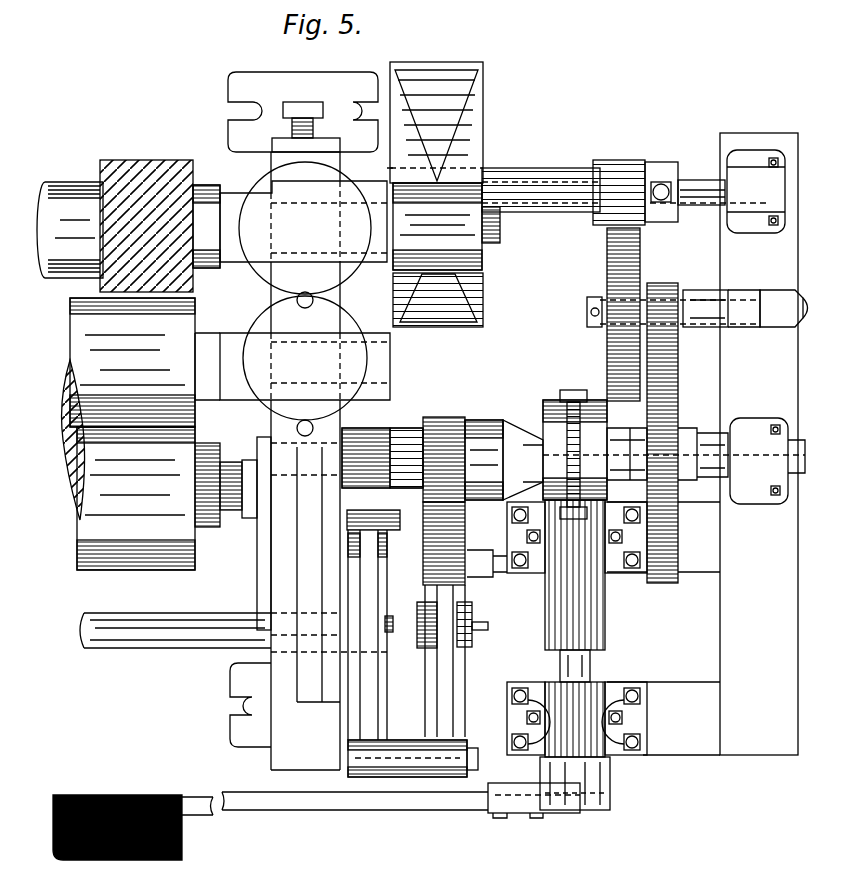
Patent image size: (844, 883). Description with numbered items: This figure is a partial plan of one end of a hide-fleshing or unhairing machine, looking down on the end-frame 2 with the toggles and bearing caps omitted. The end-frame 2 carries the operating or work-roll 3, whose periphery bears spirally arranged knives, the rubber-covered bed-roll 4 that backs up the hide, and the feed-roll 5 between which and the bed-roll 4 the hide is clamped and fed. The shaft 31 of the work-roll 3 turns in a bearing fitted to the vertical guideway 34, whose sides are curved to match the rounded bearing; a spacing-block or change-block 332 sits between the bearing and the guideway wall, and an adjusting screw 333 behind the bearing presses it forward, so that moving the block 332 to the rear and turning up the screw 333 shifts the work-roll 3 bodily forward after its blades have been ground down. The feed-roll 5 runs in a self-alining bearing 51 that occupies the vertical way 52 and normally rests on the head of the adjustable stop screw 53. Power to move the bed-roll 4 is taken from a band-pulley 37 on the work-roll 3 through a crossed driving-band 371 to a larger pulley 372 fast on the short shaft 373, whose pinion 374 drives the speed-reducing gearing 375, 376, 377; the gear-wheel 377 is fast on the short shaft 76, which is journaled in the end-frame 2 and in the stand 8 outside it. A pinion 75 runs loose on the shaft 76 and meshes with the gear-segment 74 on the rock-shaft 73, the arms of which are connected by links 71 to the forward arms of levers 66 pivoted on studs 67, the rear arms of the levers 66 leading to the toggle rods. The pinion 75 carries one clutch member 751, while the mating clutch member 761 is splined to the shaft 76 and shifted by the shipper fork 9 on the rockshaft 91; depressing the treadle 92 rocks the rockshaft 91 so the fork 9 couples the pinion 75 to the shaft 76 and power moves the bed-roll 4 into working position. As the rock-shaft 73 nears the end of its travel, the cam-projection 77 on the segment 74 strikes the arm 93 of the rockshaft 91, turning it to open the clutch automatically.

The end-frame 2 is at (302, 765).
The operating or work-roll 3 is at (100, 175).
The bed-roll 4 is at (128, 465).
The feed-roll 5 is at (132, 362).
The stand 8 is at (752, 378).
The shipper fork 9 is at (573, 410).
The shaft 31 is at (492, 243).
The vertical guideway 34 is at (265, 196).
The band-pulley 37 is at (488, 172).
The self-alining bearing 51 is at (305, 358).
The vertical guide or way 52 is at (314, 300).
The adjustable stop screw 53 is at (305, 228).
The lever 66 is at (382, 703).
The stud 67 is at (393, 648).
The link 71 is at (378, 780).
The rock-shaft 73 is at (140, 648).
The gear-segment 74 is at (418, 500).
The pinion 75 is at (443, 420).
The short shaft 76 is at (520, 403).
The cam-projection 77 is at (470, 562).
The shipper rockshaft 91 is at (597, 662).
The treadle 92 is at (185, 838).
The arm 93 is at (497, 598).
The spacing-block or change-block 332 is at (195, 313).
The adjusting screw 333 is at (290, 104).
The crossed driving-band 371 is at (484, 138).
The pulley 372 is at (492, 84).
The short shaft 373 is at (695, 178).
The pinion 374 is at (621, 160).
The speed-reducing gear 375 is at (628, 242).
The speed-reducing gear 376 is at (650, 283).
The gear-wheel 377 is at (652, 394).
The clutch member 751 is at (487, 420).
The clutch member 761 is at (566, 398).